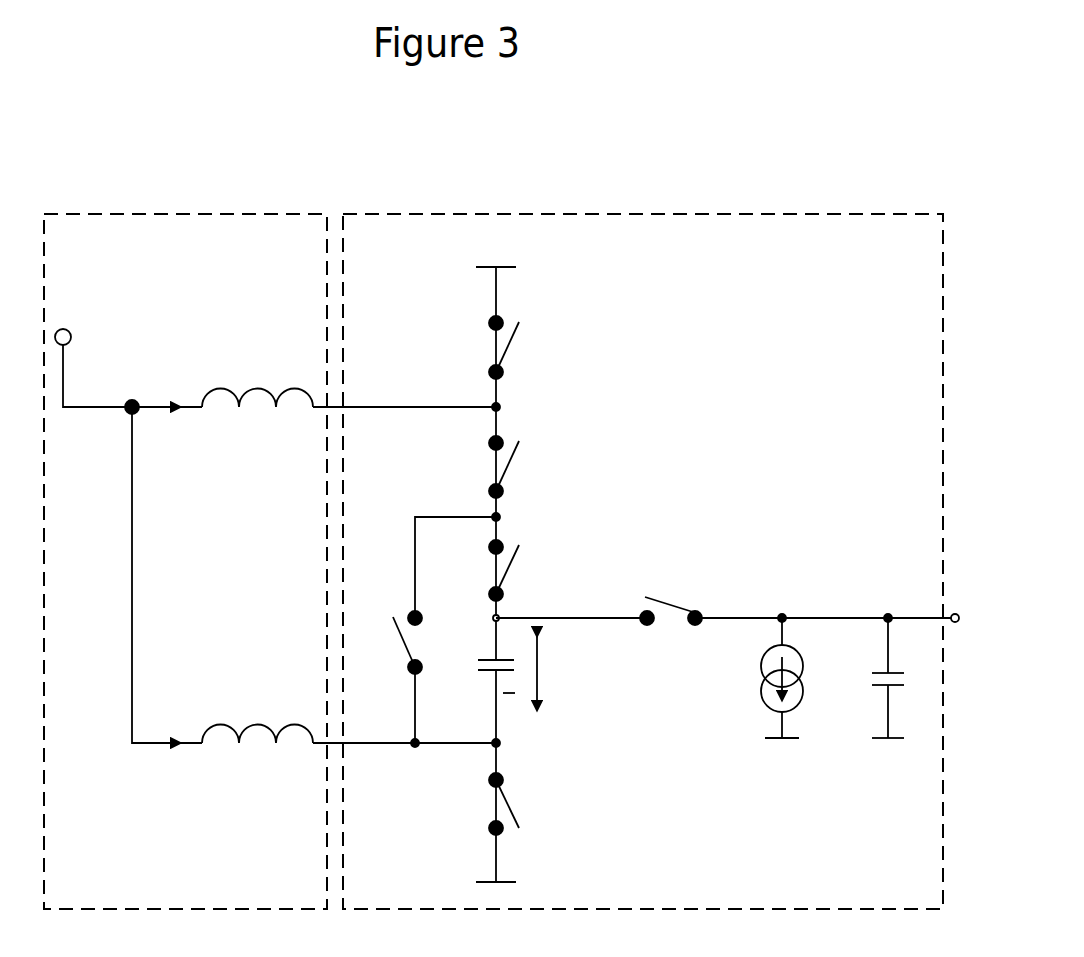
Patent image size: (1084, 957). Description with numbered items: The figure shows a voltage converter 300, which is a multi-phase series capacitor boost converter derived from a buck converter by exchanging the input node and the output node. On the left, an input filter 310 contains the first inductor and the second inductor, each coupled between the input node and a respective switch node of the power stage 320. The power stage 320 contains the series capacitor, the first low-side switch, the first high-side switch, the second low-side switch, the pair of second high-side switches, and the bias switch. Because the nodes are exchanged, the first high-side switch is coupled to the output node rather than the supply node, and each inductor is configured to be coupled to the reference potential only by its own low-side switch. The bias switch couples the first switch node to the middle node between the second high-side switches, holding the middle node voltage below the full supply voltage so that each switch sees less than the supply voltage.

The voltage converter 300 is at (748, 85).
The input filter 310 is at (168, 245).
The power stage 320 is at (625, 245).